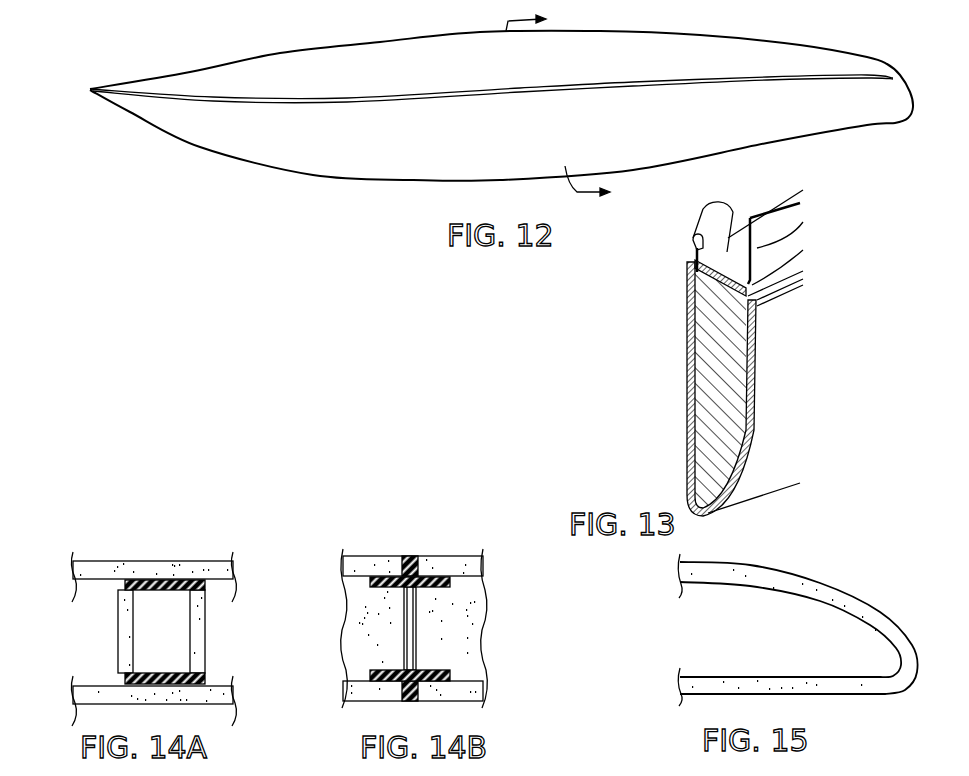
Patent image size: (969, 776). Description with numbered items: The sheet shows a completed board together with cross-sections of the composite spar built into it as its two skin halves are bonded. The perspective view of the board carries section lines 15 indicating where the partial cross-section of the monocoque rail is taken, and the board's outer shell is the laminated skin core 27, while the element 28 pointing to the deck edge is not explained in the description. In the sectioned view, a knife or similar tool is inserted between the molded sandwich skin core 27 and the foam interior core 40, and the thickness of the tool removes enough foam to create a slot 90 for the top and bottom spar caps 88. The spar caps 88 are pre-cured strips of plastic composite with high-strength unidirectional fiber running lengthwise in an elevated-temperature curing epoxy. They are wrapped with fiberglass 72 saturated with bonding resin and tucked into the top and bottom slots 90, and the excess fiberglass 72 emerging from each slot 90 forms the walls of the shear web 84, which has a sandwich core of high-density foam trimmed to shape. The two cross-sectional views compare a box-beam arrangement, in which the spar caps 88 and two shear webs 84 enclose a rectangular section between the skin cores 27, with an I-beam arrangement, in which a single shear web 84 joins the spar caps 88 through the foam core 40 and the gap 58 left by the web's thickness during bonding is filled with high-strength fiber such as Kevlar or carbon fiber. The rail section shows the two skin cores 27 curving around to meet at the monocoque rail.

In FIG. 12, the section line / section of rail 15 is at (571, 105).
In FIG. 15, the section line / section of rail 15 is at (915, 650).
In FIG. 13, the skin panel 27 is at (690, 473).
In FIG. 14A, the skin panel 27 is at (233, 571).
In FIG. 14B, the skin panel 27 is at (483, 566).
In FIG. 15, the skin panel 27 is at (678, 569).
In FIG. 12, the board body 28 is at (190, 74).
In FIG. 13, the foam core 40 is at (700, 428).
In FIG. 14B, the foam core 40 is at (467, 612).
In FIG. 12, the seam / joint 58 is at (871, 78).
In FIG. 14B, the seam / joint 58 is at (409, 557).
In FIG. 13, the skin fold 72 is at (703, 209).
In FIG. 13, the spar web 84 is at (696, 276).
In FIG. 14A, the spar web 84 is at (125, 651).
In FIG. 14B, the spar web 84 is at (407, 650).
In FIG. 13, the adhesive bond layer 88 is at (692, 251).
In FIG. 14A, the adhesive bond layer 88 is at (132, 600).
In FIG. 14B, the adhesive bond layer 88 is at (376, 585).
In FIG. 13, the rail shell 90 is at (746, 318).